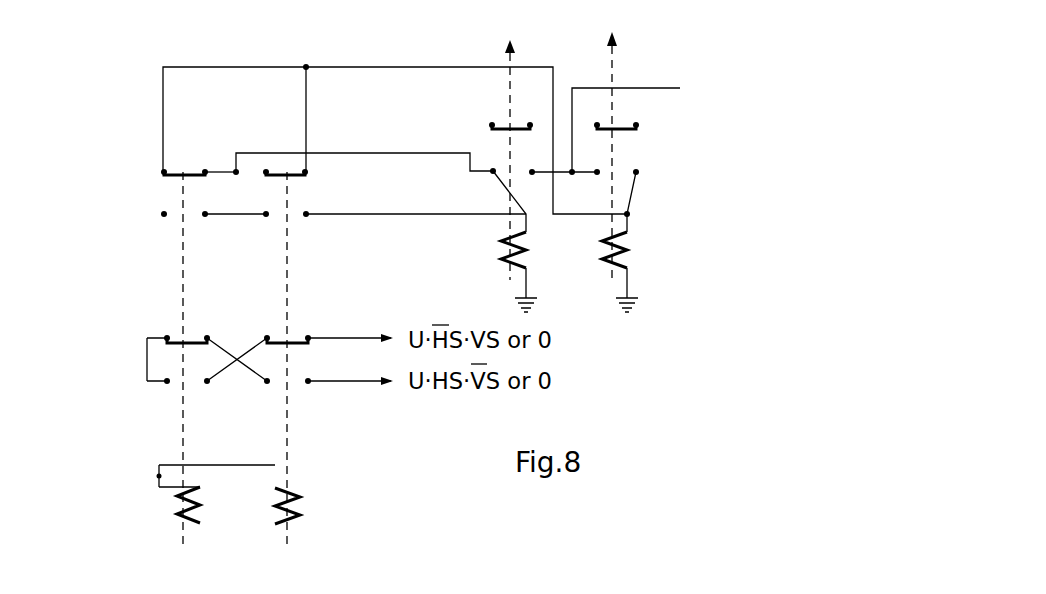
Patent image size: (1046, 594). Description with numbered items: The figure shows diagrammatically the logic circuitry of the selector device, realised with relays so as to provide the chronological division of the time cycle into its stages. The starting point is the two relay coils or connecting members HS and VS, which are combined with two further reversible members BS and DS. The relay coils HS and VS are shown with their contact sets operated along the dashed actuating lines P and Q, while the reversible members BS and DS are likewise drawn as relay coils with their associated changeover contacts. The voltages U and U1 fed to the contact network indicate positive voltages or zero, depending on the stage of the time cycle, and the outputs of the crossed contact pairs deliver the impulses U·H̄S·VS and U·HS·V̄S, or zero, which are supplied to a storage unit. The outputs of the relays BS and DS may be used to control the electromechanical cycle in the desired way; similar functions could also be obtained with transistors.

The reversible member BS is at (525, 176).
The reversible member DS is at (634, 172).
The relay coil VS is at (204, 505).
The relay coil HS is at (309, 506).
The actuating line P is at (173, 367).
The actuating line Q is at (277, 367).
The positive voltage U is at (62, 361).
The positive voltage U1 is at (159, 476).